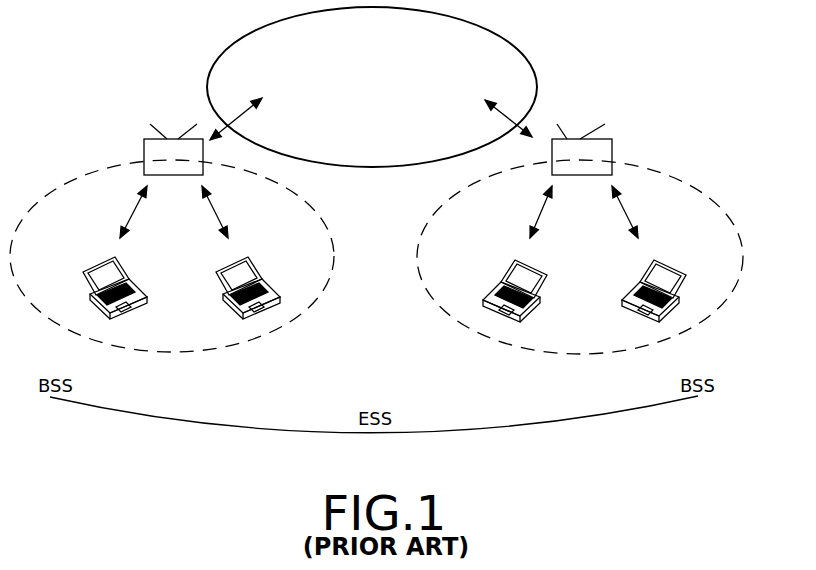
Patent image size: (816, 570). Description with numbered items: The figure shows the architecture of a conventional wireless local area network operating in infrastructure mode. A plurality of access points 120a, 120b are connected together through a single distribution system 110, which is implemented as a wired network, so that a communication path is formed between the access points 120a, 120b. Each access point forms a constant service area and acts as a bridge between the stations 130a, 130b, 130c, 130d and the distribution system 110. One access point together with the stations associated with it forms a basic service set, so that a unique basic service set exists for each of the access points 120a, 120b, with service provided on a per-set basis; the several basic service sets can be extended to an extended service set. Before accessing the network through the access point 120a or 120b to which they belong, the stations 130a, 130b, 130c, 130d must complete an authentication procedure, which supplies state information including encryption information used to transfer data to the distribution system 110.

The distribution system 110 is at (537, 84).
The access point 120a is at (174, 175).
The access point 120b is at (582, 175).
The station 130a is at (122, 265).
The station 130b is at (256, 265).
The station 130c is at (550, 284).
The station 130d is at (677, 258).